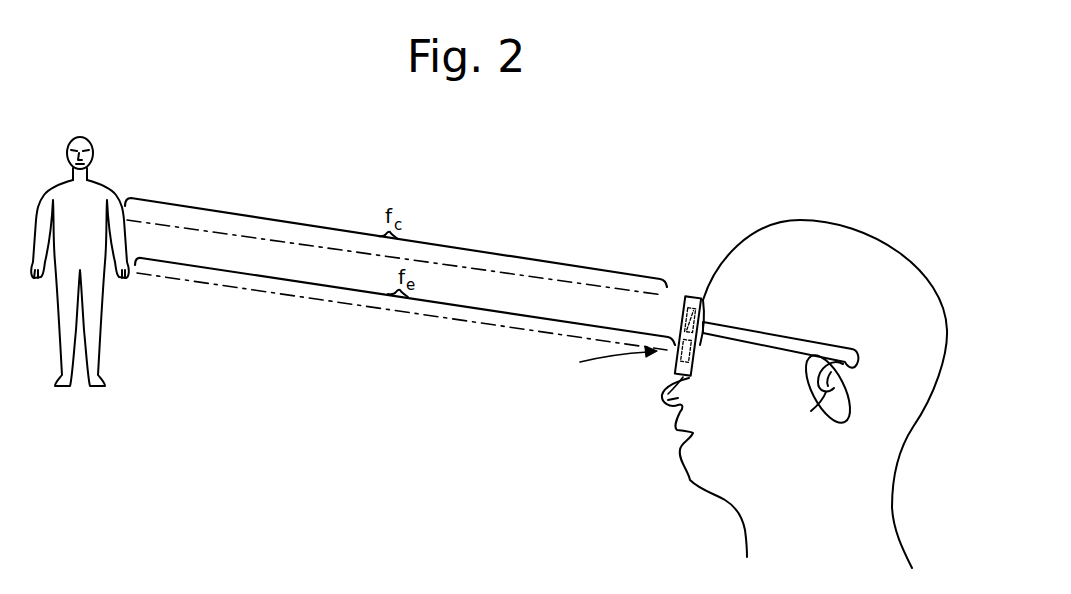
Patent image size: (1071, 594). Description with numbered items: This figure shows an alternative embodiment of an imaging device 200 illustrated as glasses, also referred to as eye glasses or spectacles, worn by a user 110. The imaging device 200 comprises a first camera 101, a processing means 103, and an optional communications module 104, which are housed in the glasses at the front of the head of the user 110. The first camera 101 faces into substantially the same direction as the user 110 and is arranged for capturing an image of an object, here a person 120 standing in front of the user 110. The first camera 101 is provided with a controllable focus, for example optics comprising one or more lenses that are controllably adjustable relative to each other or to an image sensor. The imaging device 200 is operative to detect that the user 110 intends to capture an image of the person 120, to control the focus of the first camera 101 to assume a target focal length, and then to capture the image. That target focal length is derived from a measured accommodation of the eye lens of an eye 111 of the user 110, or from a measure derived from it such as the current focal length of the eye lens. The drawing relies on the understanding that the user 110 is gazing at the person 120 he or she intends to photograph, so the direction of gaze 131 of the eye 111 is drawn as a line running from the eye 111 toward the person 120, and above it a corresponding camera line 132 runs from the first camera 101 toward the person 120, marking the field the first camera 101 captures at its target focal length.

The person 120 is at (80, 135).
The camera field of view 132 is at (230, 233).
The direction of gaze 131 is at (257, 290).
The imaging device 200 is at (592, 360).
The user 110 is at (807, 233).
The eye 111 is at (700, 357).
The first camera 101 is at (633, 324).
The processing means 103 is at (681, 362).
The communications module 104 is at (668, 394).